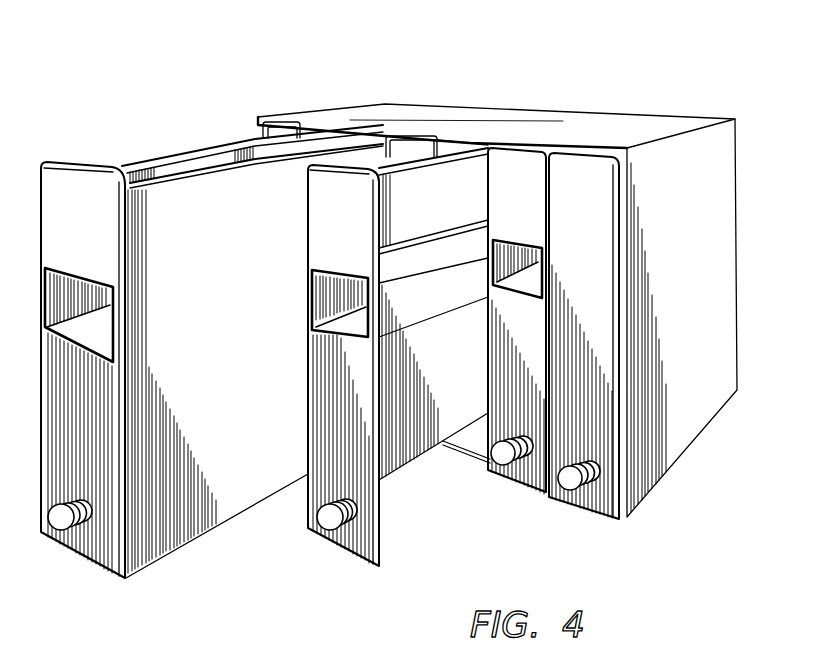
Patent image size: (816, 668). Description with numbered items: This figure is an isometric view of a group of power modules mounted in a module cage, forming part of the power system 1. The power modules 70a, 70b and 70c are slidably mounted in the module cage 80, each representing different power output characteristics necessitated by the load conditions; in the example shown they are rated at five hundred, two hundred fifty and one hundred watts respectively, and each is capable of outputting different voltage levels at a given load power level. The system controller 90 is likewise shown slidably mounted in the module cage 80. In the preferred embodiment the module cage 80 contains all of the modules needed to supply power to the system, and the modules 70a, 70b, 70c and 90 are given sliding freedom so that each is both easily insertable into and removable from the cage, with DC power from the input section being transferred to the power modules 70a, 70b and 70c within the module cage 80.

The power system 1 is at (417, 315).
The module cage 80 is at (733, 281).
The power module 70a is at (233, 514).
The power module 70b is at (338, 547).
The power module 70c is at (510, 482).
The system controller 90 is at (583, 503).